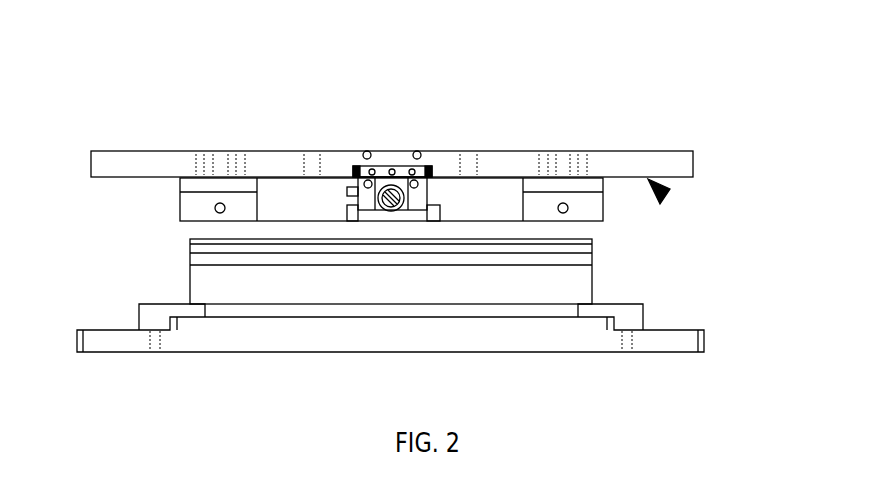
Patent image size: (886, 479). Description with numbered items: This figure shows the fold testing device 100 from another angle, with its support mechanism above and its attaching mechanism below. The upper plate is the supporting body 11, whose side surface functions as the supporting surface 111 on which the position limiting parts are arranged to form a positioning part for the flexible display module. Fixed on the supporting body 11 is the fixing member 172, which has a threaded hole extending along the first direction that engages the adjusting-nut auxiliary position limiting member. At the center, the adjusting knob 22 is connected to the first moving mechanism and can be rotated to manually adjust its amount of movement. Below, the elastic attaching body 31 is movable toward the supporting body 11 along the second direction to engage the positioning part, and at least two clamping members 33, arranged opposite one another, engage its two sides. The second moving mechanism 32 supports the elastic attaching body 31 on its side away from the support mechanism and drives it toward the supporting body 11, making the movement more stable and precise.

The fold testing device 100 is at (78, 75).
The supporting body 11 is at (678, 162).
The supporting surface 111 is at (668, 198).
The fixing member 172 is at (193, 207).
The adjusting knob 22 is at (384, 185).
The elastic attaching body 31 is at (202, 268).
The clamping member 33 is at (630, 319).
The second moving mechanism 32 is at (682, 343).